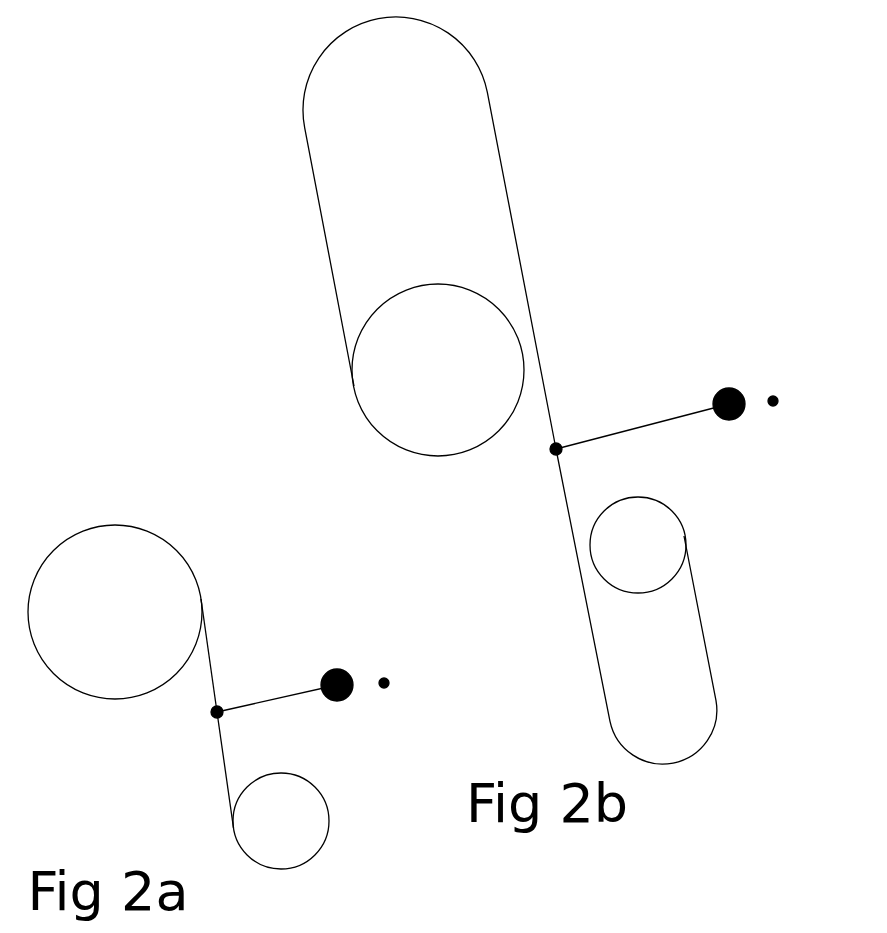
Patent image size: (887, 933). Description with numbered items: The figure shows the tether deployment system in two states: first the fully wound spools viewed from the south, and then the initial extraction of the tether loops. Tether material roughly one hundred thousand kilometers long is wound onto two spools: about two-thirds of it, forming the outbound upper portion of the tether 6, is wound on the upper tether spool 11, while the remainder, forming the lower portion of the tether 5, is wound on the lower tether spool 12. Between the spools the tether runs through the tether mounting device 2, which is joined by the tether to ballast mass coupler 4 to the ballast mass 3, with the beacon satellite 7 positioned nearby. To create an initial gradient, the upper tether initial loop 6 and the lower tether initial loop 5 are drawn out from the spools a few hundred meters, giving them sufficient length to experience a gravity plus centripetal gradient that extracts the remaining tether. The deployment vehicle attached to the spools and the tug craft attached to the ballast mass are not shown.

In FIG. 2A, the tether mounting device 2 is at (212, 718).
In FIG. 2B, the tether mounting device 2 is at (552, 455).
In FIG. 2A, the ballast mass 3 is at (343, 700).
In FIG. 2B, the ballast mass 3 is at (737, 422).
In FIG. 2A, the tether to ballast mass coupler 4 is at (262, 699).
In FIG. 2B, the tether to ballast mass coupler 4 is at (633, 430).
In FIG. 2A, the lower tether initial loop 5 is at (227, 757).
In FIG. 2B, the lower tether initial loop 5 is at (568, 507).
In FIG. 2A, the upper tether initial loop 6 is at (213, 668).
In FIG. 2B, the upper tether initial loop 6 is at (547, 390).
In FIG. 2A, the beacon satellite 7 is at (380, 680).
In FIG. 2B, the beacon satellite 7 is at (772, 392).
In FIG. 2A, the upper tether spool 11 is at (42, 659).
In FIG. 2B, the upper tether spool 11 is at (370, 425).
In FIG. 2A, the lower tether spool 12 is at (318, 852).
In FIG. 2B, the lower tether spool 12 is at (682, 525).